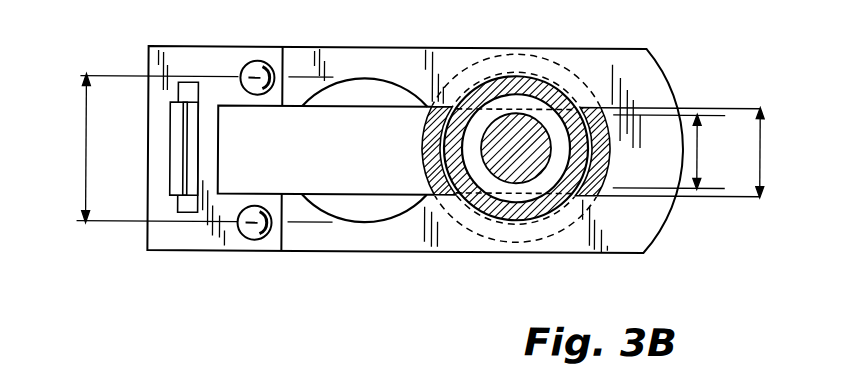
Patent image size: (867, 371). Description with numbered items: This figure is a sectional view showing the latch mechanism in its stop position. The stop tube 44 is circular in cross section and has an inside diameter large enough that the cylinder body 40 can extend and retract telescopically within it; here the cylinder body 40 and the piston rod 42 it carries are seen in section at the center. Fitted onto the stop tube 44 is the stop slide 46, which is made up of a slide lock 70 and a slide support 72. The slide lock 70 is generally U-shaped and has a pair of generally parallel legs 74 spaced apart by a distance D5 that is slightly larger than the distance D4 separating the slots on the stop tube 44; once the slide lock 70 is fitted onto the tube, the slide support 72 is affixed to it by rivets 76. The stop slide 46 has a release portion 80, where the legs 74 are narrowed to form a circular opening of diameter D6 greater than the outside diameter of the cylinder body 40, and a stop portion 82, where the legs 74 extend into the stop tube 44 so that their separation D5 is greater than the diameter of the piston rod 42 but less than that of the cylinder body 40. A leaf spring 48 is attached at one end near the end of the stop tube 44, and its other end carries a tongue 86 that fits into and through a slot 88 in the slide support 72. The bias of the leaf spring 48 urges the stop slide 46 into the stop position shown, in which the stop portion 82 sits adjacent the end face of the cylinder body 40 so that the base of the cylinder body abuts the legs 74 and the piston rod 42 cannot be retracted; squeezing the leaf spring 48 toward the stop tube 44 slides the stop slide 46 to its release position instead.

The cylinder body 40 is at (541, 86).
The piston rod 42 is at (504, 115).
The stop tube 44 is at (418, 162).
The stop slide 46 is at (374, 40).
The leaf spring 48 is at (347, 159).
The slide lock 70 is at (638, 75).
The slide support 72 is at (173, 239).
The legs 74 is at (300, 65).
The rivets 76 is at (256, 74).
The release portion 80 is at (353, 201).
The stop portion 82 is at (553, 169).
The tongue 86 is at (176, 112).
The slot 88 is at (193, 203).
The distance separating slots D4 is at (700, 147).
The distance between legs D5 is at (763, 150).
The diameter of release portion opening D6 is at (86, 157).